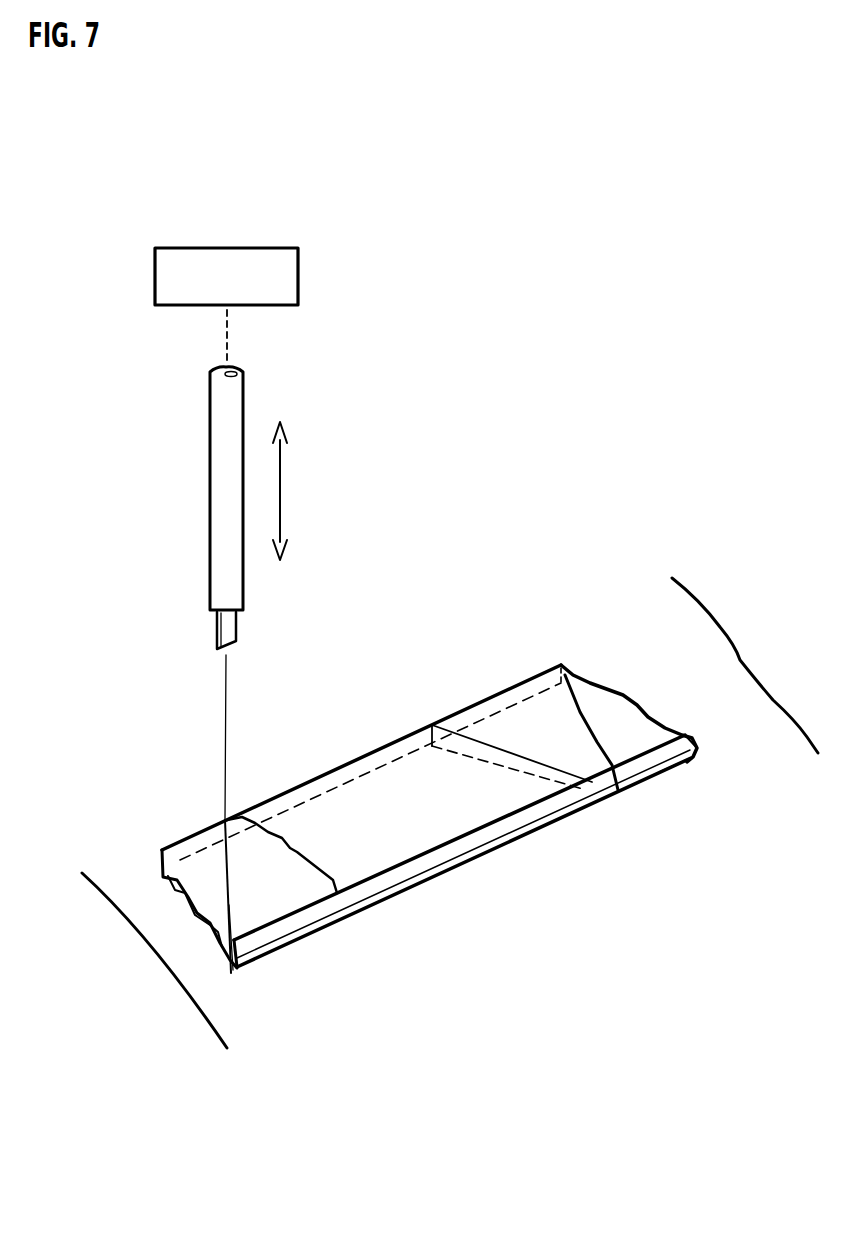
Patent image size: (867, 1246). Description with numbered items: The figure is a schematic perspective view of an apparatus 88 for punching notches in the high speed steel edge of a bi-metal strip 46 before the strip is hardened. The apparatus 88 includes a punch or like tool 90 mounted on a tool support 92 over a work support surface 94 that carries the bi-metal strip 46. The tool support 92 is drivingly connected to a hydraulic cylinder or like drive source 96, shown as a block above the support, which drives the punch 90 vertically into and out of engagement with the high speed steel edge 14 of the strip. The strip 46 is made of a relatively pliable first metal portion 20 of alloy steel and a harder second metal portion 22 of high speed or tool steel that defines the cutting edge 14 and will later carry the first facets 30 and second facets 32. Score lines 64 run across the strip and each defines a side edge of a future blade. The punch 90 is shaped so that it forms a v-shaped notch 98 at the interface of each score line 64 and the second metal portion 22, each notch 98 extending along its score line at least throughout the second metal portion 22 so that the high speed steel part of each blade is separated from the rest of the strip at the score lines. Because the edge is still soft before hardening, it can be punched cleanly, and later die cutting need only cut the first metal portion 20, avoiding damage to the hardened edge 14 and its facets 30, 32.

The cutting edge 14 is at (437, 875).
The first metal portion 20 is at (304, 905).
The second metal portion 22 is at (339, 922).
The first facets 30 is at (668, 767).
The second facets 32 is at (678, 742).
The bi-metal strip 46 is at (416, 727).
The score lines 64 is at (222, 824).
The apparatus 88 is at (466, 323).
The punch 90 is at (217, 633).
The tool support 92 is at (210, 467).
The work support surface 94 is at (167, 922).
The drive source 96 is at (298, 277).
The notch 98 is at (612, 767).